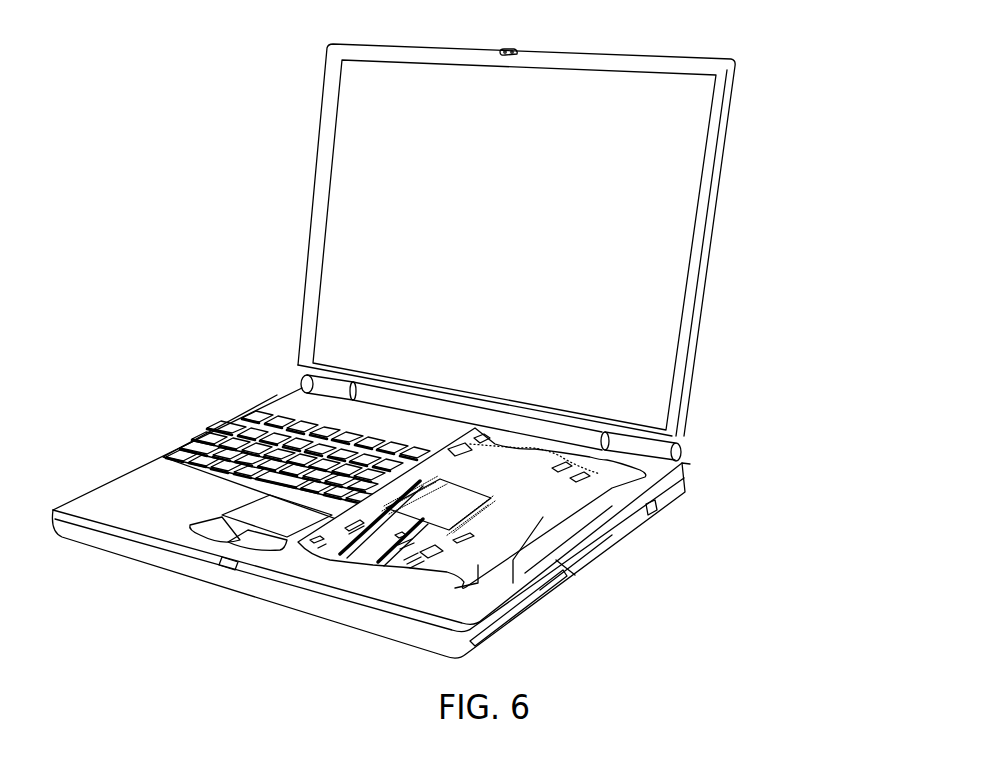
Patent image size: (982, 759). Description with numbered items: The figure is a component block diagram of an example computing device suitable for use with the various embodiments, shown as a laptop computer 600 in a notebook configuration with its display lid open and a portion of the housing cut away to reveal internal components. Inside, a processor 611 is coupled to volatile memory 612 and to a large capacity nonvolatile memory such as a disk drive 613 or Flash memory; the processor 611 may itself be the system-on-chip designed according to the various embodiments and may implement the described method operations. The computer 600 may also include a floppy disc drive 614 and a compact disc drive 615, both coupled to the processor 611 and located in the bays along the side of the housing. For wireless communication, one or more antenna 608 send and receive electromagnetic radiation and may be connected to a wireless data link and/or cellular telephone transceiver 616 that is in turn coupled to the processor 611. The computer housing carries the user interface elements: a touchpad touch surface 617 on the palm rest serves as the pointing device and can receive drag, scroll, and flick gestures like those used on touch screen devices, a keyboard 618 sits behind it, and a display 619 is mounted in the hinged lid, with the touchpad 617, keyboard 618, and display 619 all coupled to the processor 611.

The laptop computer 600 is at (403, 351).
The antenna 608 is at (537, 580).
The processor 611 is at (438, 506).
The volatile memory 612 is at (372, 543).
The disk drive 613 is at (480, 583).
The floppy disc drive 614 is at (513, 583).
The compact disc (CD) drive 615 is at (595, 493).
The cellular telephone transceiver 616 is at (570, 572).
The touchpad touch surface 617 is at (253, 517).
The keyboard 618 is at (207, 443).
The display 619 is at (677, 381).